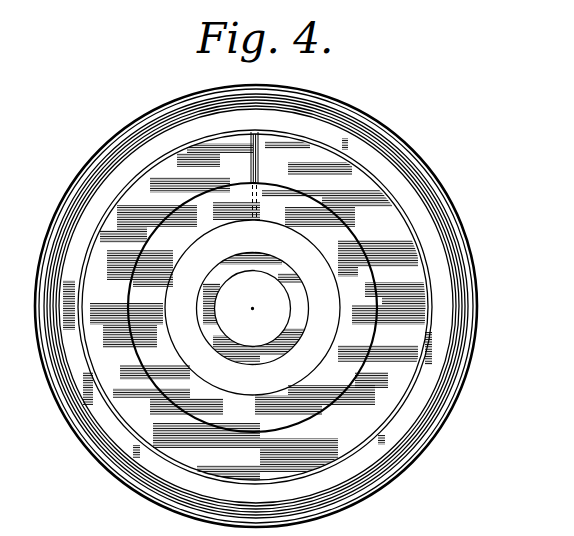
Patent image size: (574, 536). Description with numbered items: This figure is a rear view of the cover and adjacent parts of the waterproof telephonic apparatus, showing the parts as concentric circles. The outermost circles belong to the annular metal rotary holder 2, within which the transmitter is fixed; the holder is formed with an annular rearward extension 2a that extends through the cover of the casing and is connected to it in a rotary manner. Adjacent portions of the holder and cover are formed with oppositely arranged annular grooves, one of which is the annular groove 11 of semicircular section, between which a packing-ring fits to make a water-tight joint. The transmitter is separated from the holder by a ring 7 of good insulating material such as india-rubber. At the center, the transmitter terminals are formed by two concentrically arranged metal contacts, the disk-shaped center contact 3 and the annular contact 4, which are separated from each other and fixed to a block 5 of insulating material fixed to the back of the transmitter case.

The annular metal rotary holder 2 is at (68, 183).
The annular rearward extension 2a is at (113, 432).
The center contact 3 is at (253, 308).
The annular contact 4 is at (262, 307).
The block of insulating material 5 is at (288, 307).
The ring of insulating material 7 is at (367, 172).
The annular groove 11 is at (438, 418).